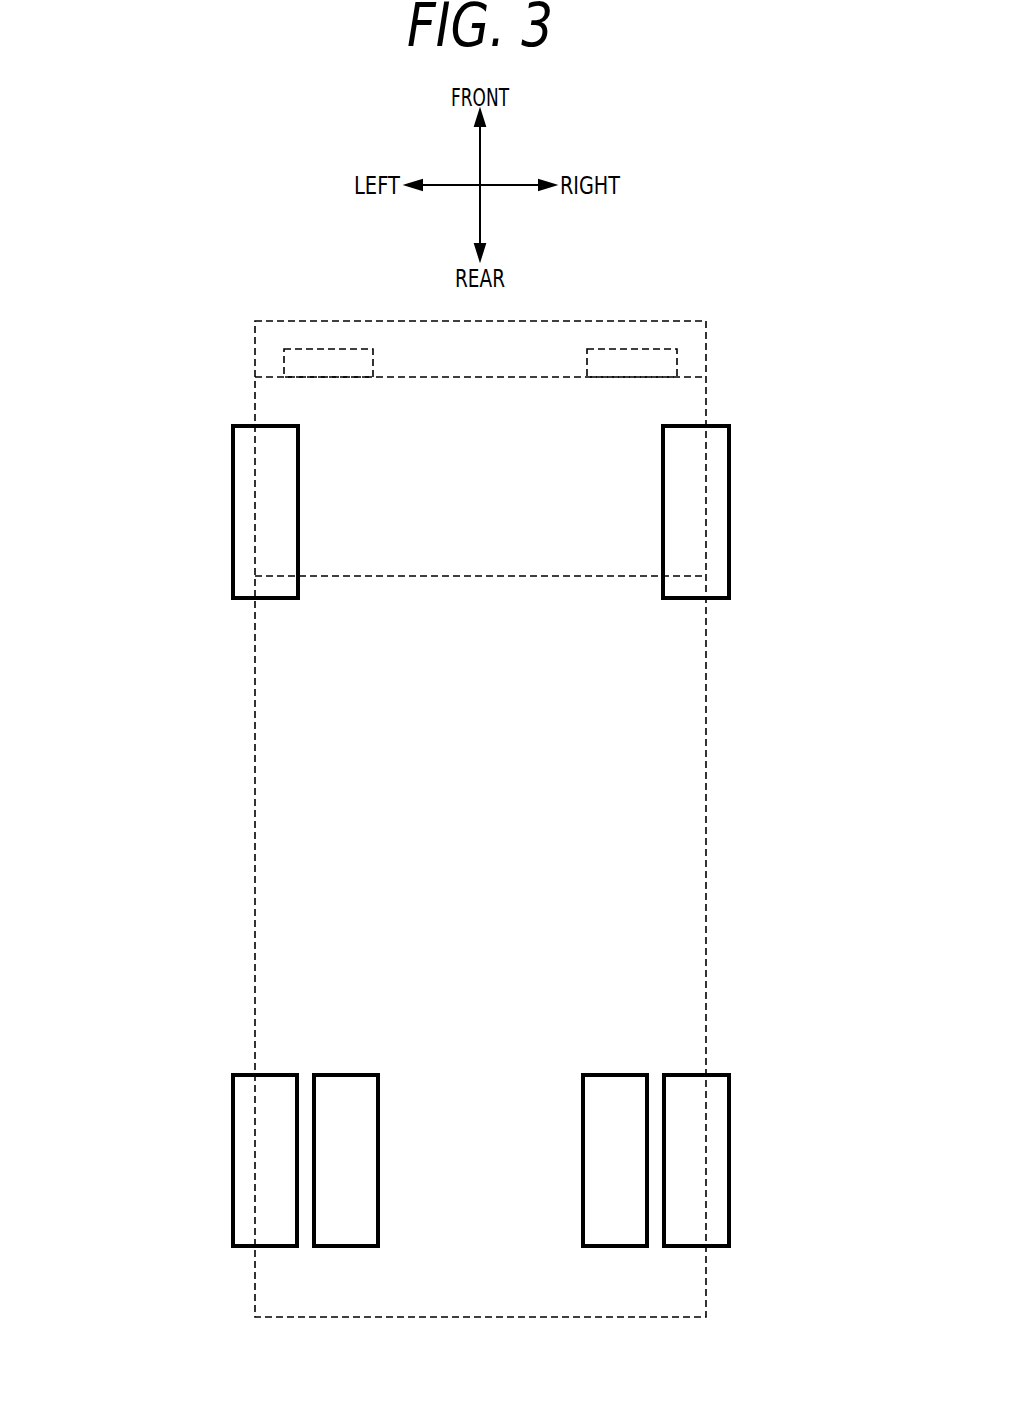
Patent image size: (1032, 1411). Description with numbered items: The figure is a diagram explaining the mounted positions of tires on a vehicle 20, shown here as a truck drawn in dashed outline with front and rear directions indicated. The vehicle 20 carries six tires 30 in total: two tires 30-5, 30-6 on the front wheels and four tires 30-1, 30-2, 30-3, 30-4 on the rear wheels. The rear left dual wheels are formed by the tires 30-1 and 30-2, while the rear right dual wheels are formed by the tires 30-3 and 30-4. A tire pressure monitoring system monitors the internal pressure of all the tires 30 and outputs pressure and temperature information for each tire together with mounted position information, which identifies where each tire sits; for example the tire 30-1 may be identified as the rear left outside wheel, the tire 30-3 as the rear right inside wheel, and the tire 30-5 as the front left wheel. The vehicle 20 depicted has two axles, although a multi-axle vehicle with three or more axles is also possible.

The vehicle 20 is at (255, 348).
The tires 30 is at (474, 836).
The tire 30-1 is at (233, 1140).
The tire 30-2 is at (347, 1075).
The tire 30-3 is at (610, 1075).
The tire 30-4 is at (729, 1175).
The tire 30-5 is at (233, 500).
The tire 30-6 is at (729, 505).